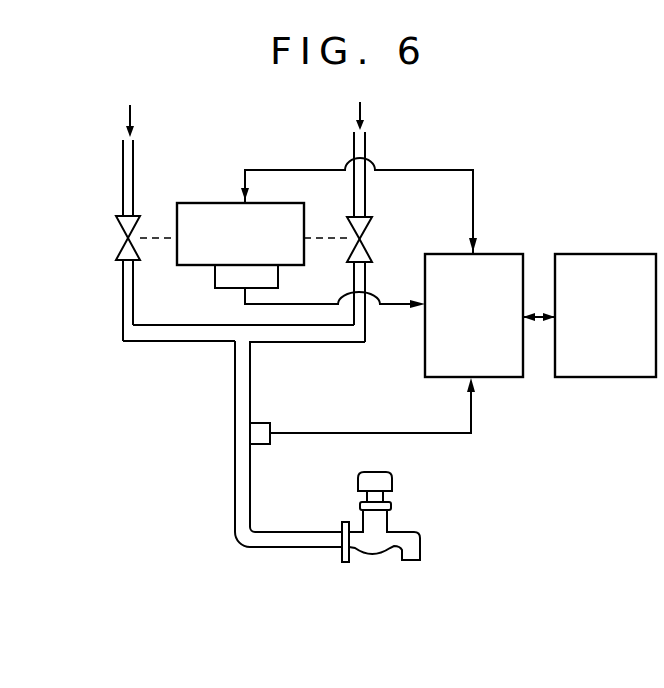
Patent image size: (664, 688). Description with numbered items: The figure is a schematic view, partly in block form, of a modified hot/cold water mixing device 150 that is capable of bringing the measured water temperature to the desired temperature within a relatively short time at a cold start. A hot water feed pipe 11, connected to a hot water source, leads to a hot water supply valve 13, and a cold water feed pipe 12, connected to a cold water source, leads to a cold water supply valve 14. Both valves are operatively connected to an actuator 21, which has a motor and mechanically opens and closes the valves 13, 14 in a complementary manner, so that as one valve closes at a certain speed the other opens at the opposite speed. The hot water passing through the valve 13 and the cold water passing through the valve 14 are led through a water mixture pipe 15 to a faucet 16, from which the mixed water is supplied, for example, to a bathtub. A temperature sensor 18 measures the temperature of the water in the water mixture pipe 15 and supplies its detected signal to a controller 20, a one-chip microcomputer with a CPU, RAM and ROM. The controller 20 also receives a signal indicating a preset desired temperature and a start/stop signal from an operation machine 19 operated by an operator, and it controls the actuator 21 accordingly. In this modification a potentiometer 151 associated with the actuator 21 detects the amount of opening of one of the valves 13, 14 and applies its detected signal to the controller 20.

The hot water feed pipe 11 is at (130, 160).
The cold water feed pipe 12 is at (362, 150).
The hot water supply valve 13 is at (138, 250).
The cold water supply valve 14 is at (374, 250).
The water mixture pipe 15 is at (237, 367).
The faucet 16 is at (378, 524).
The temperature sensor 18 is at (261, 445).
The operation machine 19 is at (600, 258).
The controller 20 is at (500, 260).
The actuator 21 is at (230, 213).
The hot/cold water mixing device 150 is at (552, 170).
The potentiometer 151 is at (215, 276).